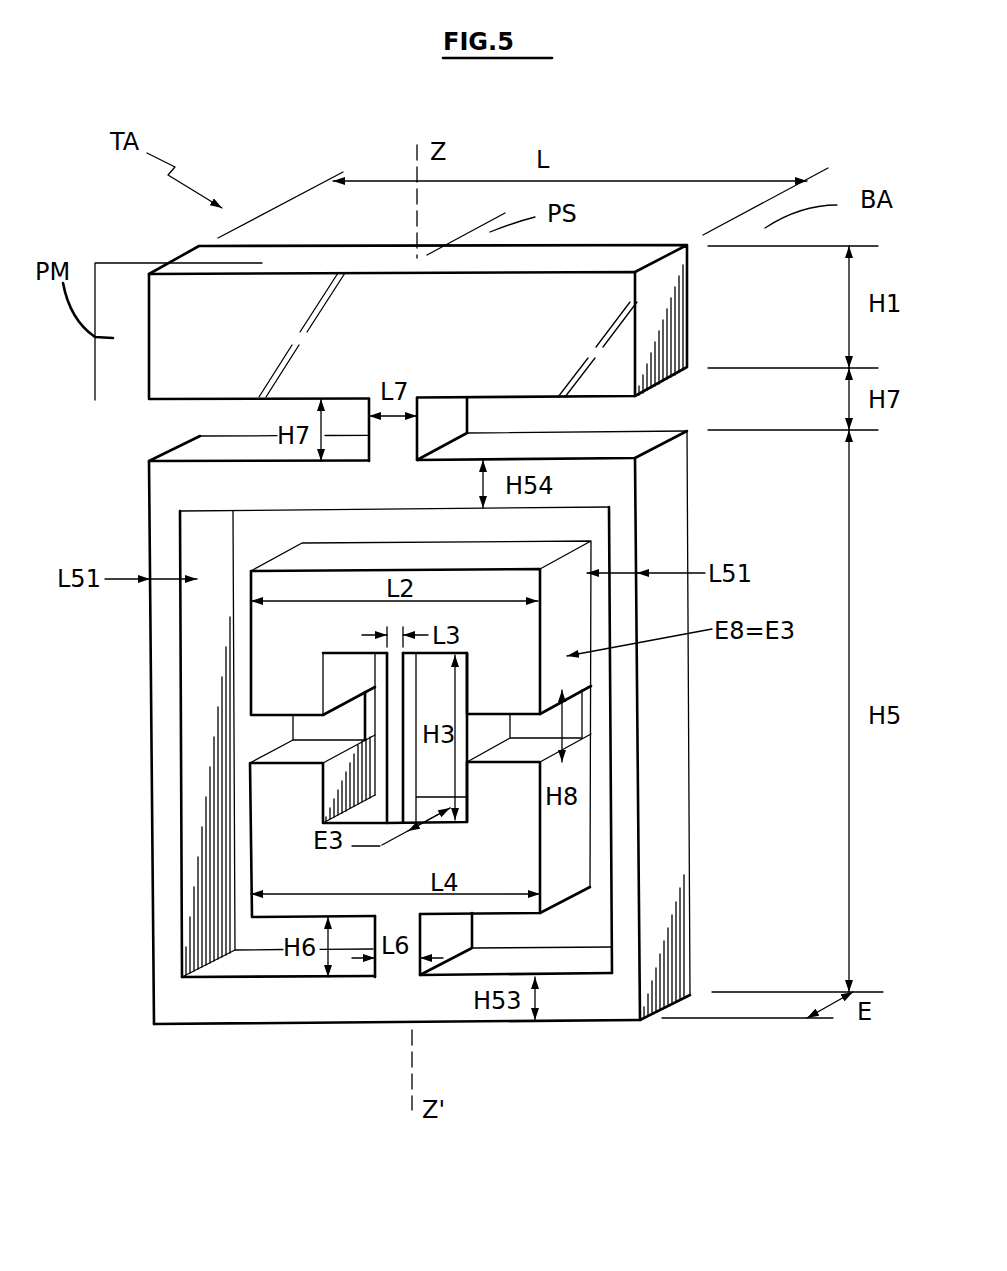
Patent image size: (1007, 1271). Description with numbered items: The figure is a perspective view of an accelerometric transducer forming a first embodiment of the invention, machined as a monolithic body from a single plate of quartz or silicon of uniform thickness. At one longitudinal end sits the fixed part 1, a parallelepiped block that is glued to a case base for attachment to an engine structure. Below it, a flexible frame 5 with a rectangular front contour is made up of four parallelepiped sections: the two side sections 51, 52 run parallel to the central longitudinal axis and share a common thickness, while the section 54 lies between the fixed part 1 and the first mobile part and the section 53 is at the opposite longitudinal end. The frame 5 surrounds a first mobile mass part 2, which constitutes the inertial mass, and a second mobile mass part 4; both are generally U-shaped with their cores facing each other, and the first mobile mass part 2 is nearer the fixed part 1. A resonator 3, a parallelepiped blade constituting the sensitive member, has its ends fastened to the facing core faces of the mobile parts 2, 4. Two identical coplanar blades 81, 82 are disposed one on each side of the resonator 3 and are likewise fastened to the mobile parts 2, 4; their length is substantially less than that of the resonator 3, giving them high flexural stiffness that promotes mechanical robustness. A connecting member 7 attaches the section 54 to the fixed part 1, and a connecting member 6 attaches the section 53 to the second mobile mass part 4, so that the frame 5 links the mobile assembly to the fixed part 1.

The fixed part 1 is at (662, 327).
The first mobile mass part 2 is at (300, 565).
The resonator 3 is at (410, 716).
The second mobile mass part 4 is at (568, 870).
The flexible frame 5 is at (408, 744).
The connecting member 6 is at (447, 940).
The connecting member 7 is at (443, 423).
The section 51 is at (163, 827).
The section 52 is at (668, 850).
The section 53 is at (297, 998).
The section 54 is at (196, 450).
The blade 81 is at (306, 720).
The blade 82 is at (528, 728).